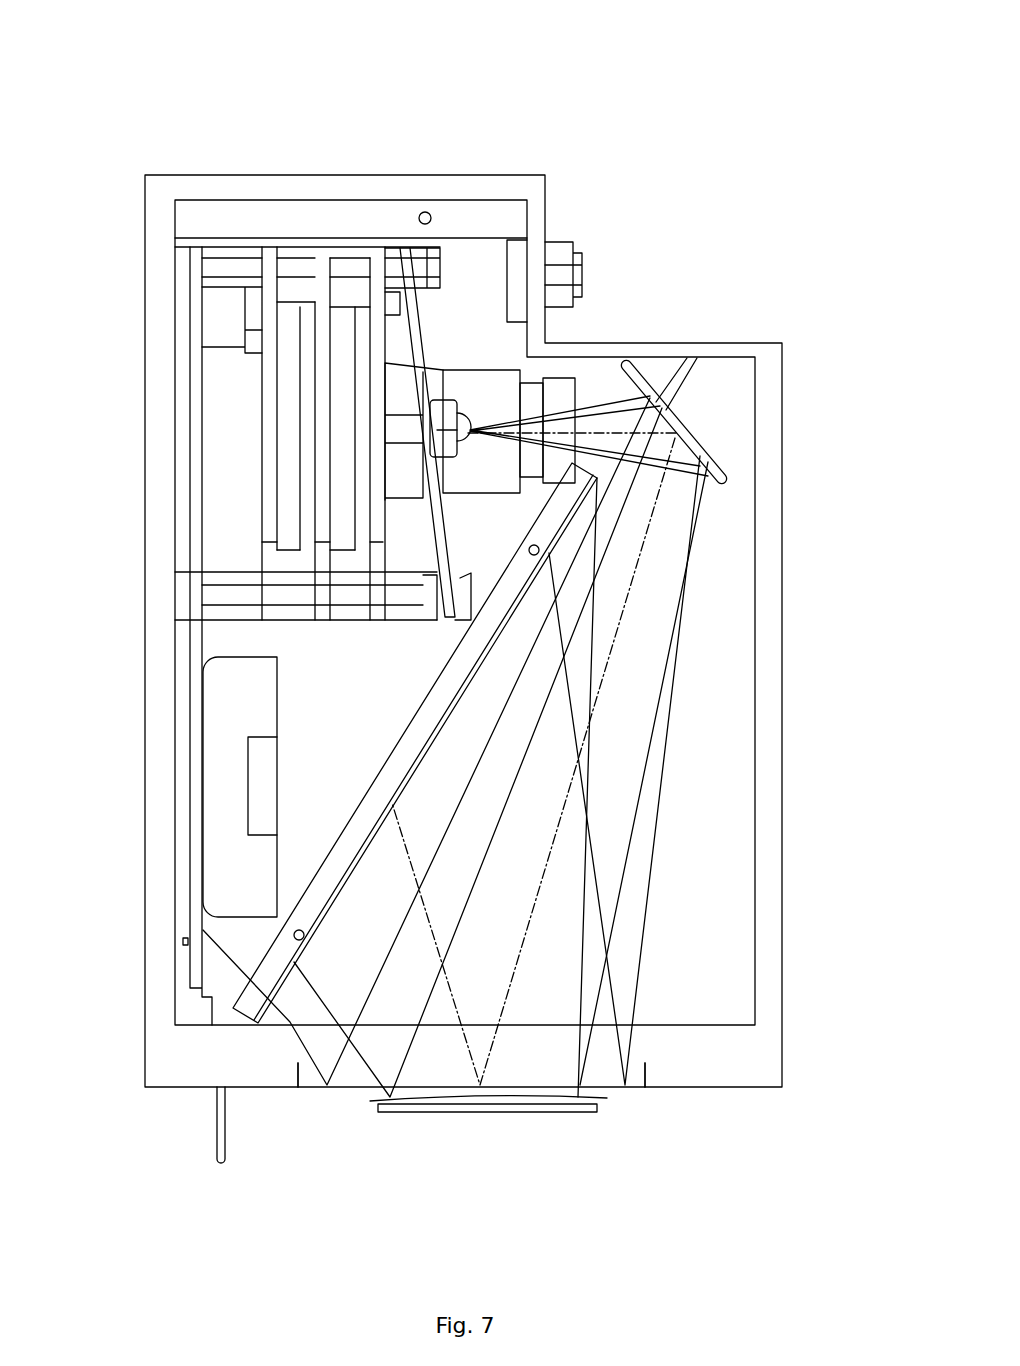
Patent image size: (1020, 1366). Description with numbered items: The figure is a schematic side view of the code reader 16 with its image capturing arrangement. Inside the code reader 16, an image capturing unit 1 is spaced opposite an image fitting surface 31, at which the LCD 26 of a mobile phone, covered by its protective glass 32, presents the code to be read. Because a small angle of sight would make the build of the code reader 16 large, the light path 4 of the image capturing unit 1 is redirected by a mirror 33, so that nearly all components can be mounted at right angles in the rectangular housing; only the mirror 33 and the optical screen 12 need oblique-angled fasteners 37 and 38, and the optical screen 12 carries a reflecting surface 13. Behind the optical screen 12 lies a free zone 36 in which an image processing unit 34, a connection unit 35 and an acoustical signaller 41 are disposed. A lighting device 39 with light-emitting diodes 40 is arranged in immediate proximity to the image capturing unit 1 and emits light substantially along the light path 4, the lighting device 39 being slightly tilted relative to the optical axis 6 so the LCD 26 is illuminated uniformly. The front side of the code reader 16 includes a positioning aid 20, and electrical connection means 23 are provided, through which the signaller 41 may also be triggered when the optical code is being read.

The code reader 16 is at (752, 88).
The lighting device 39 is at (423, 325).
The light-emitting diodes 40 is at (447, 370).
The electrical connection means 23 is at (583, 258).
The image capturing unit 1 is at (560, 378).
The light path 4 is at (592, 400).
The oblique-angled fastener 37 is at (728, 362).
The mirror 33 is at (715, 425).
The optical axis 6 is at (633, 585).
The optical screen 12 is at (447, 647).
The mirror surface 13 is at (338, 895).
The free zone 36 is at (357, 731).
The connection unit 35 is at (262, 550).
The image processing unit 34 is at (320, 620).
The acoustical signaller 41 is at (232, 762).
The oblique-angled fastener 38 is at (303, 932).
The positioning aid 20 is at (213, 1122).
The protective glass 32 is at (378, 1100).
The LCD 26 is at (510, 1113).
The image fitting surface 31 is at (637, 1090).